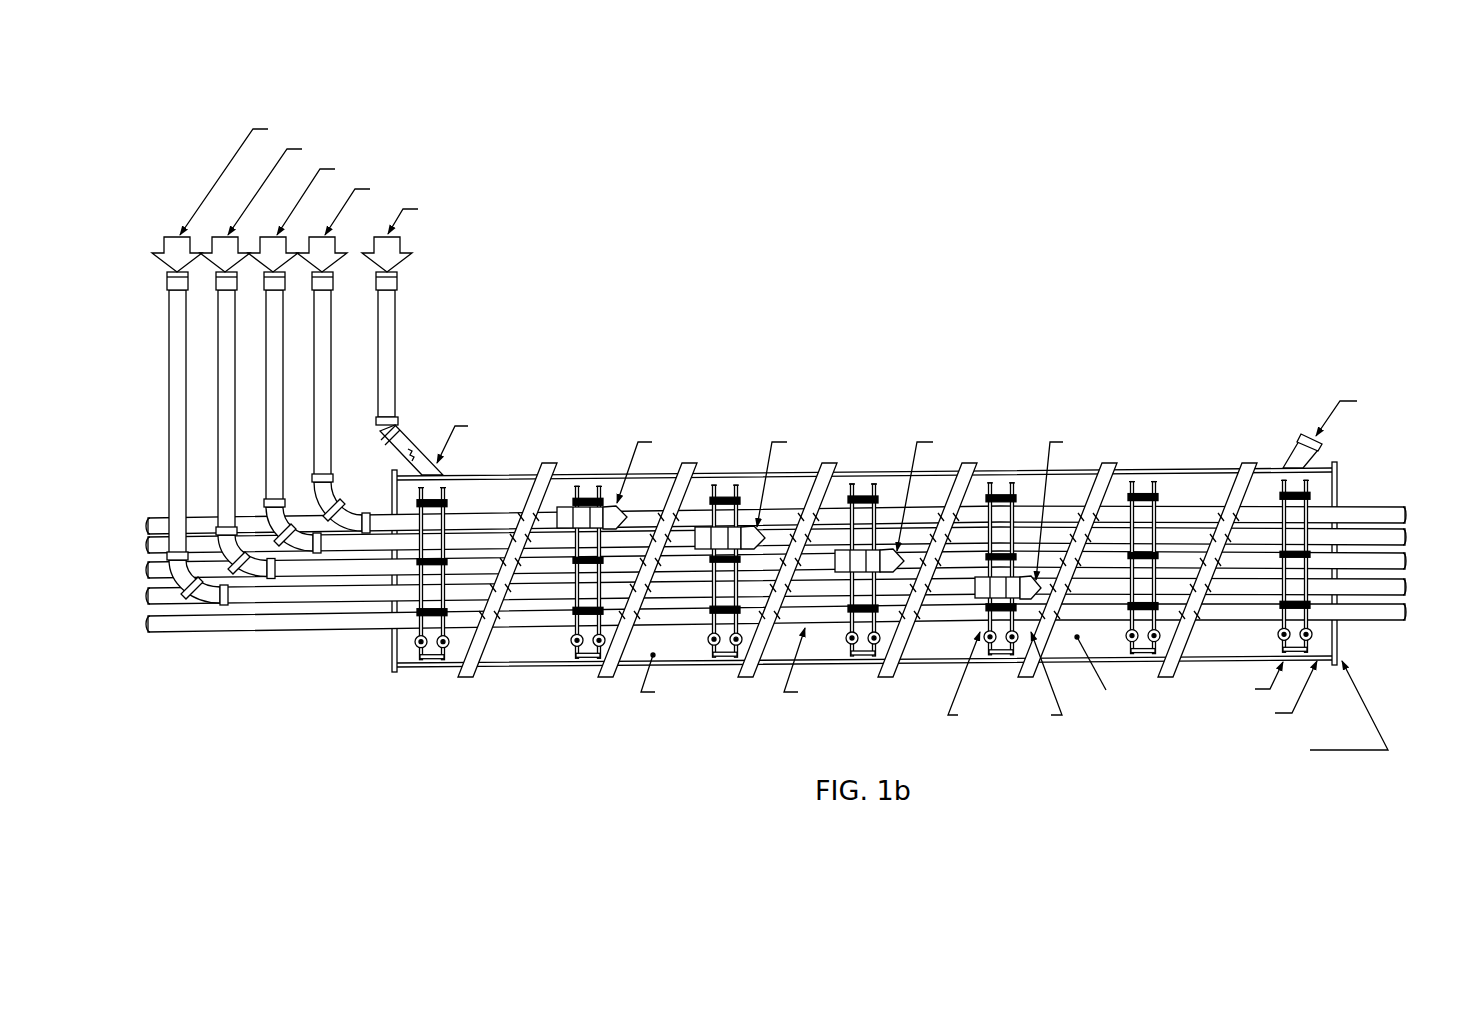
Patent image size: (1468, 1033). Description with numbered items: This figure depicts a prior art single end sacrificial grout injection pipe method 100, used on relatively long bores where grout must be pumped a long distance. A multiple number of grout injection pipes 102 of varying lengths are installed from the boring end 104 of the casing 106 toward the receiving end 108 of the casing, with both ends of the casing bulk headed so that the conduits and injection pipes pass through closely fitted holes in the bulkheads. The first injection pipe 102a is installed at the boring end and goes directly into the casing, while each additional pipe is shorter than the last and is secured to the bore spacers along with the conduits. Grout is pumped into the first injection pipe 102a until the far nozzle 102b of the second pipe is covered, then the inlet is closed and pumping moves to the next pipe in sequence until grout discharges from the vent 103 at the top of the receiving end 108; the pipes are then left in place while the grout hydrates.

The single end sacrificial grout injection pipe method 100 is at (1233, 340).
The grout injection pipes 102 is at (458, 362).
The first injection pipe 102a is at (170, 402).
The far nozzle of the second injection pipe 102b is at (898, 548).
The vent 103 is at (1300, 446).
The boring end of the casing 104 is at (394, 648).
The casing 106 is at (736, 473).
The receiving end of the casing 108 is at (1336, 630).